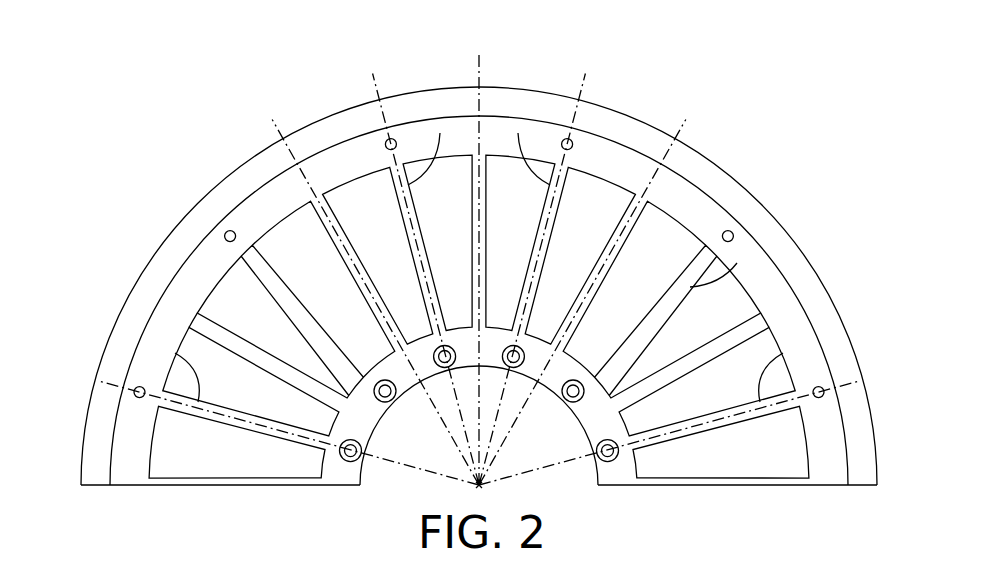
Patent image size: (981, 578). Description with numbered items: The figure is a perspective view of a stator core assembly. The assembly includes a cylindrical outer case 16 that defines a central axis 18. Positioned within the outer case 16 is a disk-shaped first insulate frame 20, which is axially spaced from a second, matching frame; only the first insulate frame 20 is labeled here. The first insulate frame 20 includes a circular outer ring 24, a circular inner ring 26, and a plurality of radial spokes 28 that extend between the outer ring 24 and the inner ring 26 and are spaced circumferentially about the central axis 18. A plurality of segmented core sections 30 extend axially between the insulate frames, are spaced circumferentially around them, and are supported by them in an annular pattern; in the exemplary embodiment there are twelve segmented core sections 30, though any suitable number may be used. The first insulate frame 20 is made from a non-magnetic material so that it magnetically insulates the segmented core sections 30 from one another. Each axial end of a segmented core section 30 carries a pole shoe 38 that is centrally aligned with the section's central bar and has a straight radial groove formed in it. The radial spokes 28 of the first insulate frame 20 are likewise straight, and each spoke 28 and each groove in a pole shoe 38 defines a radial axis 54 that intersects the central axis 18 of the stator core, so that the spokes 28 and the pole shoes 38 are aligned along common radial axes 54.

The cylindrical outer case 16 is at (800, 265).
The central axis 18 is at (476, 485).
The first insulate frame 20 is at (655, 186).
The outer ring 24 is at (812, 304).
The inner ring 26 is at (593, 408).
The radial spokes 28 is at (456, 190).
The segmented core sections 30 is at (456, 246).
The pole shoe 38 is at (518, 182).
The radial axis 54 is at (368, 80).